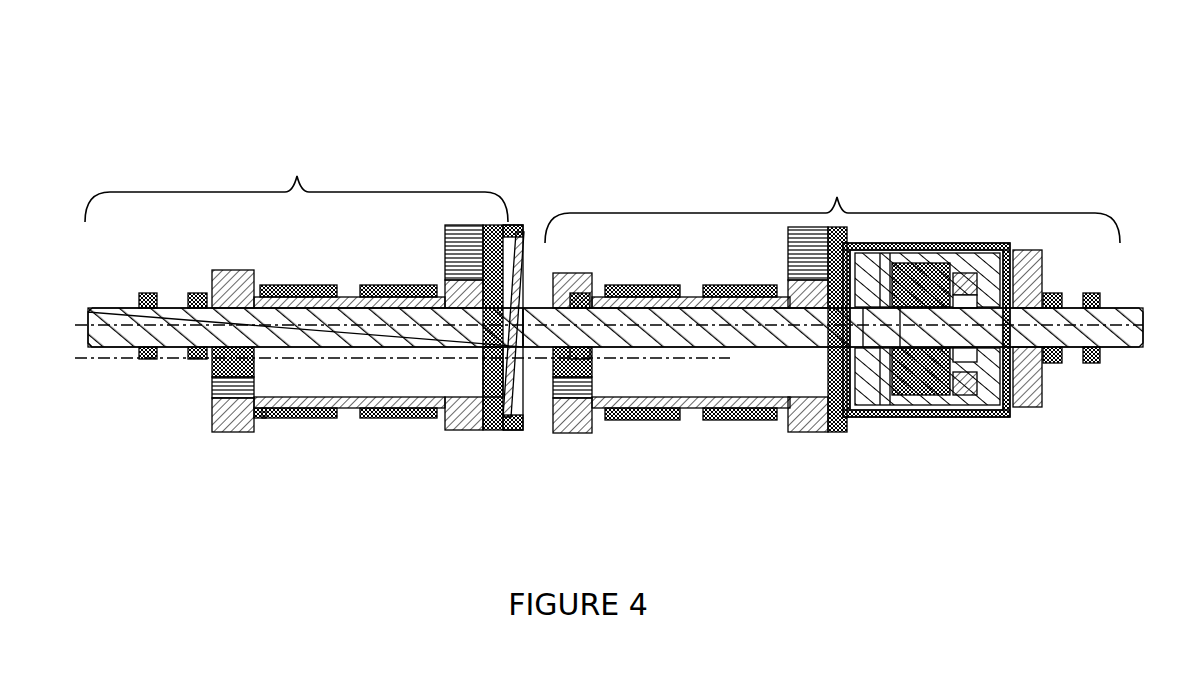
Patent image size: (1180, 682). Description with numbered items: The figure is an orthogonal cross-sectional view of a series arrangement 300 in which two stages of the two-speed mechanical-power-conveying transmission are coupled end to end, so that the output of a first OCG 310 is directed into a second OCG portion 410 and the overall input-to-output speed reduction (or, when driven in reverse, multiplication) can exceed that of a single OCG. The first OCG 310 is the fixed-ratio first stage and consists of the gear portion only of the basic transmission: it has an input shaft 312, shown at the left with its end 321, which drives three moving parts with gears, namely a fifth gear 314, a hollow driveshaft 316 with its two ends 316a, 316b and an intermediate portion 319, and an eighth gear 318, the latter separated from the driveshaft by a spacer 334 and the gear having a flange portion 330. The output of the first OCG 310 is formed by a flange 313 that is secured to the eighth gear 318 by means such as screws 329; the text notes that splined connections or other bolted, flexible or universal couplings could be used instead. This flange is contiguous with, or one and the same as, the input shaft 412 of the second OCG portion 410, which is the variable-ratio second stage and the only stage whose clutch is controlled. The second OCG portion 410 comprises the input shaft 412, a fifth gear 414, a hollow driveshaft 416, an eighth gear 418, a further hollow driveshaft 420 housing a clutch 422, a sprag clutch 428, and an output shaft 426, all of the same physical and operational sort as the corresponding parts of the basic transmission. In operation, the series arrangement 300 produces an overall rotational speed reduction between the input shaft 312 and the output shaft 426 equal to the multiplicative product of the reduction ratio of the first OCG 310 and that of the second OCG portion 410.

The series arrangement 300 is at (605, 70).
The first OCG 310 is at (297, 153).
The second OCG portion 410 is at (835, 158).
The input shaft 312 is at (119, 343).
The flange 313 is at (513, 272).
The fifth gear 314 is at (212, 280).
The hollow driveshaft 316 is at (353, 408).
The sleeve first end 316a is at (230, 433).
The sleeve second end 316b is at (468, 432).
The eighth gear 318 is at (447, 223).
The sleeve segment 319 is at (410, 415).
The shaft end 321 is at (82, 320).
The screws 329 is at (520, 235).
The collar flange 330 is at (212, 410).
The spacer 334 is at (445, 283).
The input shaft 412 is at (617, 285).
The fifth gear 414 is at (620, 415).
The hollow driveshaft 416 is at (685, 412).
The eighth gear 418 is at (840, 423).
The hollow driveshaft 420 is at (952, 417).
The clutch 422 is at (913, 417).
The output shaft 426 is at (1130, 347).
The sprag clutch 428 is at (1050, 340).